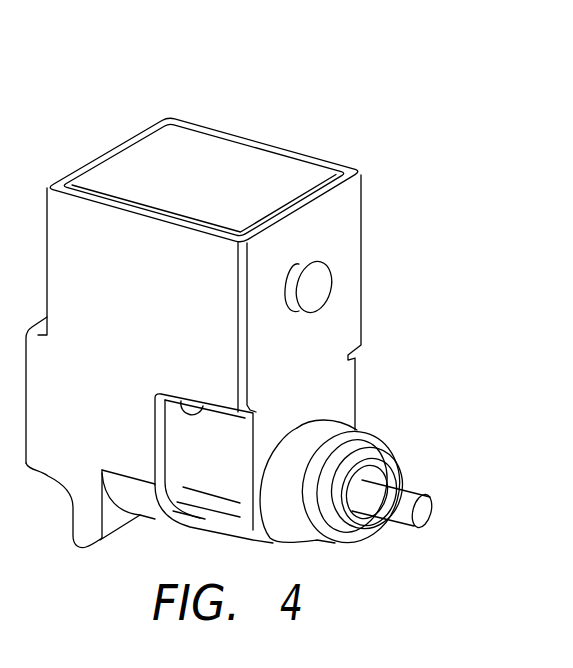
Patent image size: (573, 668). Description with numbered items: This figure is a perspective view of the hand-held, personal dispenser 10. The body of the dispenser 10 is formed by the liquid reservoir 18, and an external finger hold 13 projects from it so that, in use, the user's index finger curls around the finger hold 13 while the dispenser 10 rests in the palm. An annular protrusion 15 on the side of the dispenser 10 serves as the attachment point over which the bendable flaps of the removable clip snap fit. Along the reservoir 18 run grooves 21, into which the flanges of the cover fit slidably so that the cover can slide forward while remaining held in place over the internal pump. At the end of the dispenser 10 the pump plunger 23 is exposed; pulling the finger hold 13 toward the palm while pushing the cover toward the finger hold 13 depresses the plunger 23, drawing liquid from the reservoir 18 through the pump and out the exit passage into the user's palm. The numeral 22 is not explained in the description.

The dispenser 10 is at (66, 156).
The finger hold 13 is at (93, 536).
The annular protrusion 15 is at (322, 292).
The liquid reservoir 18 is at (267, 171).
The grooves 21 is at (184, 410).
The bushing 22 is at (306, 442).
The pump plunger 23 is at (413, 491).